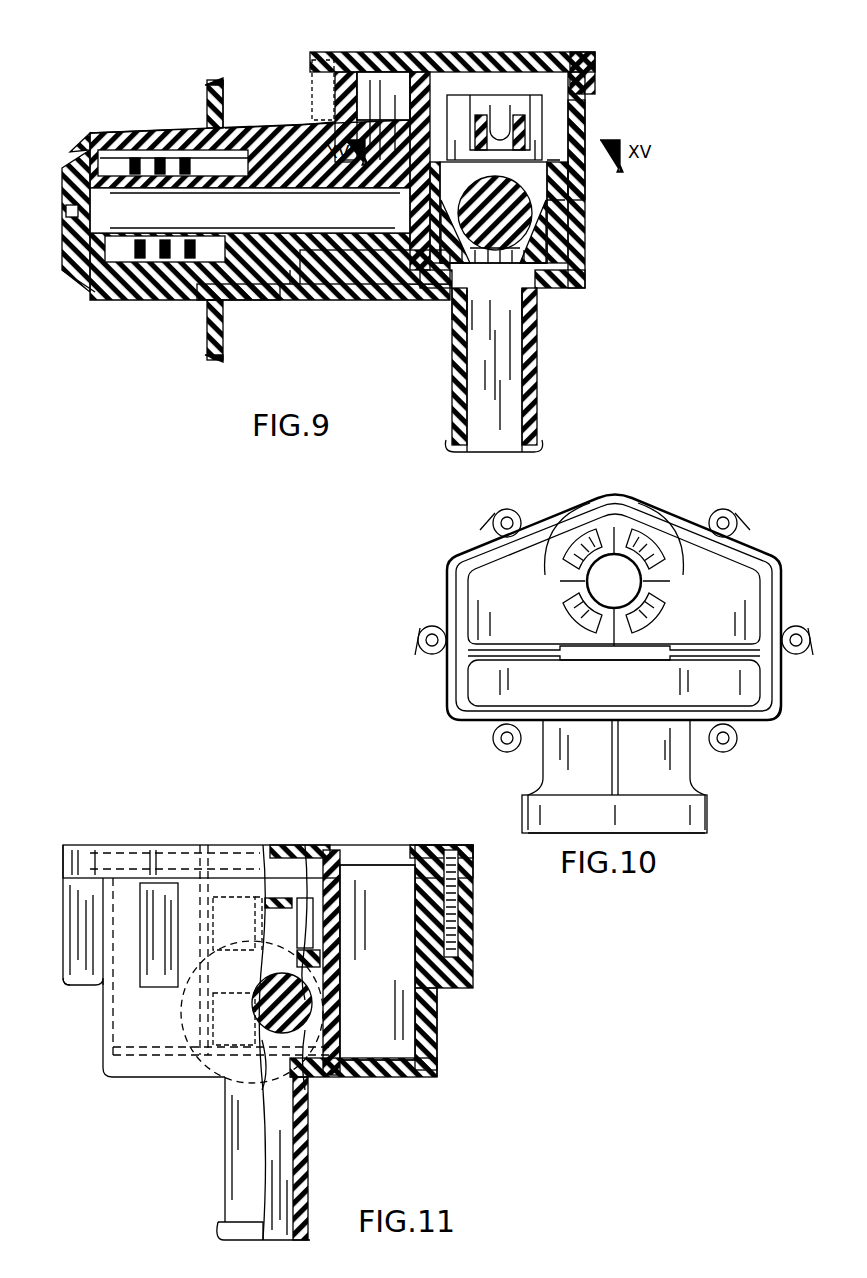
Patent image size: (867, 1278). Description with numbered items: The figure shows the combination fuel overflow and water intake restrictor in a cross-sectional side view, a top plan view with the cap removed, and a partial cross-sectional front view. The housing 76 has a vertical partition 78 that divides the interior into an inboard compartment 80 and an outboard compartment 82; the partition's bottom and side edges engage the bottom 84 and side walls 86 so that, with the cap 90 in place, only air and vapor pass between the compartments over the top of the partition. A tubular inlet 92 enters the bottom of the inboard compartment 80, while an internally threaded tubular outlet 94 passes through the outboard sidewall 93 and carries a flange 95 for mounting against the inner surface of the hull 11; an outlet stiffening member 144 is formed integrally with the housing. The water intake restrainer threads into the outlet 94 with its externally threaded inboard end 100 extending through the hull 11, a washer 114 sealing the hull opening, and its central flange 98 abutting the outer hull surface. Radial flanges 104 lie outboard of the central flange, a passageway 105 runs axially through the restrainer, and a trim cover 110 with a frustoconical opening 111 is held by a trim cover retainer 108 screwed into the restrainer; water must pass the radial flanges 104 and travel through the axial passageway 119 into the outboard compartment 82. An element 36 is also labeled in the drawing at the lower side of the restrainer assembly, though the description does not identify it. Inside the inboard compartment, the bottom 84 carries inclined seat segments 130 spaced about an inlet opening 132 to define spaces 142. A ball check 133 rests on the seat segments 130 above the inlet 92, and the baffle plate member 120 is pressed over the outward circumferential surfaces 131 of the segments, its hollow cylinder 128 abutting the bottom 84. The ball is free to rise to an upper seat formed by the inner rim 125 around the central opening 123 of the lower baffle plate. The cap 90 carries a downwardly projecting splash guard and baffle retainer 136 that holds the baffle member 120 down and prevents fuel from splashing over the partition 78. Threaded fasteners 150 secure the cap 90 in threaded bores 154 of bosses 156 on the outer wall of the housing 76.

In FIG. 9, the hull 11 is at (215, 85).
In FIG. 9, the pin 36 is at (197, 320).
In FIG. 9, the housing 76 is at (580, 200).
In FIG. 10, the housing 76 is at (768, 560).
In FIG. 9, the vertical partition 78 is at (410, 150).
In FIG. 10, the vertical partition 78 is at (485, 618).
In FIG. 9, the inboard compartment 80 is at (585, 110).
In FIG. 10, the inboard compartment 80 is at (762, 585).
In FIG. 9, the outboard compartment 82 is at (310, 130).
In FIG. 10, the outboard compartment 82 is at (740, 680).
In FIG. 11, the bottom 84 is at (362, 1078).
In FIG. 11, the side walls 86 is at (115, 1055).
In FIG. 9, the cap 90 is at (578, 52).
In FIG. 11, the cap 90 is at (348, 845).
In FIG. 9, the tubular inlet 92 is at (537, 370).
In FIG. 11, the tubular inlet 92 is at (240, 1160).
In FIG. 10, the outboard sidewall 93 is at (762, 722).
In FIG. 9, the tubular outlet 94 is at (345, 290).
In FIG. 10, the tubular outlet 94 is at (690, 772).
In FIG. 9, the flange 95 is at (245, 300).
In FIG. 10, the flange 95 is at (705, 830).
In FIG. 9, the central flange 98 is at (210, 125).
In FIG. 9, the externally threaded inboard end 100 is at (248, 128).
In FIG. 9, the radial flanges 104 is at (190, 258).
In FIG. 9, the passageway 105 is at (290, 284).
In FIG. 9, the trim cover retainer 108 is at (70, 185).
In FIG. 9, the trim cover 110 is at (100, 130).
In FIG. 9, the frustoconical shaped opening 111 is at (100, 292).
In FIG. 9, the washer 114 is at (225, 128).
In FIG. 9, the axial passageway 119 is at (170, 235).
In FIG. 9, the baffle plate member 120 is at (520, 95).
In FIG. 11, the baffle plate member 120 is at (268, 900).
In FIG. 9, the central opening 123 is at (585, 190).
In FIG. 11, the central opening 123 is at (275, 945).
In FIG. 9, the inner rim 125 is at (487, 206).
In FIG. 11, the inner rim 125 is at (312, 985).
In FIG. 9, the hollow cylinder 128 is at (585, 225).
In FIG. 11, the hollow cylinder 128 is at (420, 1080).
In FIG. 9, the inclined seat segments 130 is at (548, 250).
In FIG. 10, the inclined seat segments 130 is at (598, 635).
In FIG. 11, the inclined seat segments 130 is at (307, 1085).
In FIG. 10, the outward circumferential surfaces 131 is at (590, 530).
In FIG. 11, the outward circumferential surfaces 131 is at (340, 1010).
In FIG. 9, the inlet opening 132 is at (455, 330).
In FIG. 10, the inlet opening 132 is at (615, 570).
In FIG. 9, the ball check 133 is at (530, 275).
In FIG. 11, the ball check 133 is at (305, 1150).
In FIG. 9, the splash guard and baffle retainer 136 is at (425, 110).
In FIG. 11, the splash guard and baffle retainer 136 is at (332, 848).
In FIG. 9, the spaces 142 is at (515, 300).
In FIG. 10, the spaces 142 is at (630, 560).
In FIG. 9, the outlet stiffening member 144 is at (282, 128).
In FIG. 10, the outlet stiffening member 144 is at (605, 765).
In FIG. 11, the threaded fasteners 150 is at (458, 892).
In FIG. 10, the threaded bores 154 is at (735, 520).
In FIG. 10, the bosses 156 is at (495, 523).
In FIG. 11, the bosses 156 is at (87, 950).